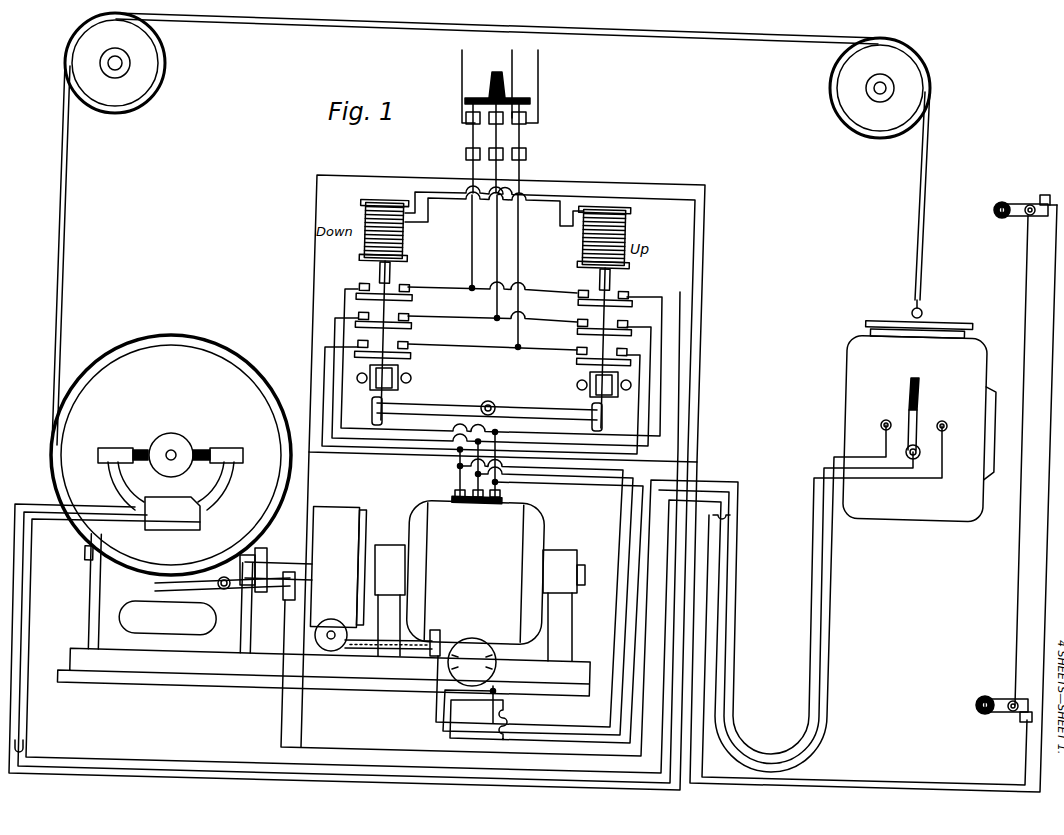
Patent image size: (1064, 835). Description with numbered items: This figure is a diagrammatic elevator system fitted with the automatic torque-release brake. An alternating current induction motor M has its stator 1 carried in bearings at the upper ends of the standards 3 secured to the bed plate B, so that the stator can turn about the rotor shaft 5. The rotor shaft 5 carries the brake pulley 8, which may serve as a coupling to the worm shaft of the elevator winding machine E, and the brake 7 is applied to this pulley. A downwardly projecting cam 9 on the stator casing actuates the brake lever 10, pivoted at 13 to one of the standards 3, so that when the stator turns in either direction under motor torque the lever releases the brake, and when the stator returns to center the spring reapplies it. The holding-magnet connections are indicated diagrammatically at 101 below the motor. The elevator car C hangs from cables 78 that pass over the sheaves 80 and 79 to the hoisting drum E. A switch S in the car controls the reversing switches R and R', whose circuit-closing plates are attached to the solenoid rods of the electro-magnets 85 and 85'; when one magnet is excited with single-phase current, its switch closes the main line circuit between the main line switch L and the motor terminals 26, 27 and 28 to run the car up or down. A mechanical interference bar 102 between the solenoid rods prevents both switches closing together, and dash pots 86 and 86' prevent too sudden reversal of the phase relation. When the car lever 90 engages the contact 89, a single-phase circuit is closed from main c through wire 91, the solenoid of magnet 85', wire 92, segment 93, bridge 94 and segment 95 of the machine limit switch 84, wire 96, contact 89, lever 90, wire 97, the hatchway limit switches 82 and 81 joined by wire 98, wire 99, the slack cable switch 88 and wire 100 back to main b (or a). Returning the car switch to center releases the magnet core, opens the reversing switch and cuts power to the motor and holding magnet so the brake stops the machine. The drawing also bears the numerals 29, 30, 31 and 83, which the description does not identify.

The stator 1 is at (535, 534).
The supports or standards 3 is at (480, 603).
The rotor shaft 5 is at (278, 565).
The brake 7 is at (338, 518).
The brake pulley 8 is at (363, 530).
The cam 9 is at (434, 652).
The brake lever 10 is at (412, 651).
The pivot 13 is at (368, 652).
The motor terminal 26 is at (482, 492).
The motor terminal 27 is at (500, 500).
The motor terminal 28 is at (457, 494).
The wire 29 is at (522, 475).
The wire 30 is at (560, 487).
The wire 31 is at (603, 474).
The cables 78 is at (65, 222).
The sheave 79 is at (138, 75).
The sheave 80 is at (870, 118).
The hatchway limit switch 81 is at (1033, 204).
The hatchway limit switch 82 is at (1010, 697).
The brush 83 is at (123, 443).
The machine limit switch 84 is at (215, 442).
The solenoid electro-magnet 85 is at (384, 222).
The solenoid electro-magnet 85' is at (588, 237).
The dash pot 86 is at (398, 374).
The dash pot 86' is at (585, 378).
The slack cable switch 88 is at (282, 594).
The contact 89 is at (948, 422).
The lever 90 is at (917, 420).
The wire 91 is at (553, 203).
The wire 92 is at (203, 527).
The segment 93 is at (230, 487).
The bridge 94 is at (243, 457).
The segment 95 is at (202, 488).
The wire 96 is at (183, 523).
The wire 97 is at (823, 560).
The wire 98 is at (1017, 570).
The wire 99 is at (1055, 258).
The wire 100 is at (305, 484).
The holding magnet connections 101 is at (474, 656).
The mechanical interference bar 102 is at (542, 408).
The main line switch L is at (465, 130).
The elevator winding machine E is at (171, 448).
The bed plate B is at (80, 640).
The elevator car C is at (858, 370).
The car switch S is at (885, 408).
The reversing switch R is at (373, 340).
The reversing switch R' is at (592, 347).
The main line circuit a is at (468, 246).
The main line circuit b is at (496, 256).
The main line circuit c is at (518, 256).